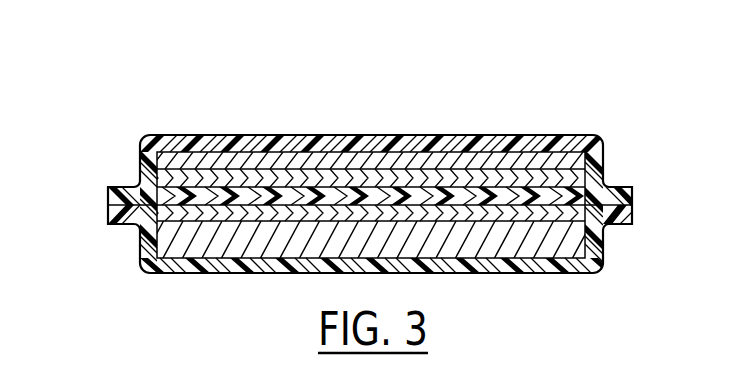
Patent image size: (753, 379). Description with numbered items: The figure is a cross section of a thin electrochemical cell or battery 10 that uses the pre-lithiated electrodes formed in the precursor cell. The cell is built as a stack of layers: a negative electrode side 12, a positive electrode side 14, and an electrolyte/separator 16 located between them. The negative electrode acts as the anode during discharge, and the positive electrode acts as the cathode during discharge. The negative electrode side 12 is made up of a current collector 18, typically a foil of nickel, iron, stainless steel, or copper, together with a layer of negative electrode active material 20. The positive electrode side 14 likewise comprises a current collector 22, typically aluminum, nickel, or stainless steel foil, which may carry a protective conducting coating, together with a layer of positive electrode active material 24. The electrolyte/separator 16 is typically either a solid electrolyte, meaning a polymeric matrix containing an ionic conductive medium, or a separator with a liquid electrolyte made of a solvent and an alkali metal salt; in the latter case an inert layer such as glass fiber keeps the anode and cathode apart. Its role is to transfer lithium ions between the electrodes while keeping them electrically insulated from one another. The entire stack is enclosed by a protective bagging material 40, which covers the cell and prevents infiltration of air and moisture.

The electrochemical cell or battery 10 is at (593, 83).
The negative electrode side 12 is at (337, 150).
The positive electrode side 14 is at (267, 260).
The electrolyte/separator 16 is at (570, 178).
The current collector 18 is at (462, 148).
The negative electrode active material 20 is at (162, 178).
The current collector 22 is at (162, 245).
The positive electrode active material 24 is at (583, 222).
The protective bagging material 40 is at (580, 273).